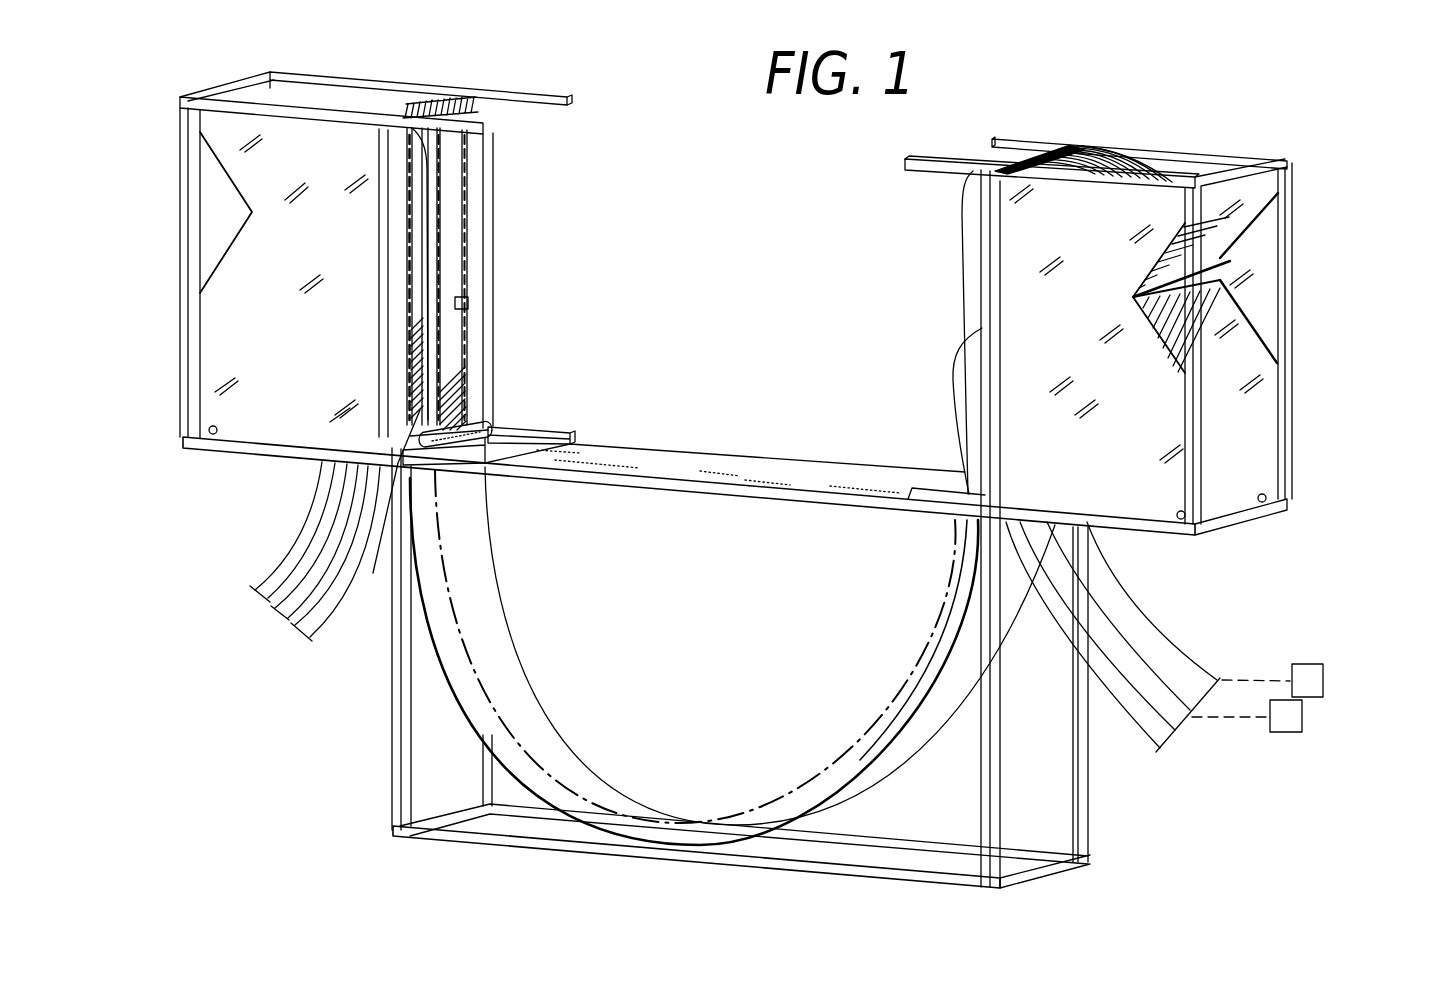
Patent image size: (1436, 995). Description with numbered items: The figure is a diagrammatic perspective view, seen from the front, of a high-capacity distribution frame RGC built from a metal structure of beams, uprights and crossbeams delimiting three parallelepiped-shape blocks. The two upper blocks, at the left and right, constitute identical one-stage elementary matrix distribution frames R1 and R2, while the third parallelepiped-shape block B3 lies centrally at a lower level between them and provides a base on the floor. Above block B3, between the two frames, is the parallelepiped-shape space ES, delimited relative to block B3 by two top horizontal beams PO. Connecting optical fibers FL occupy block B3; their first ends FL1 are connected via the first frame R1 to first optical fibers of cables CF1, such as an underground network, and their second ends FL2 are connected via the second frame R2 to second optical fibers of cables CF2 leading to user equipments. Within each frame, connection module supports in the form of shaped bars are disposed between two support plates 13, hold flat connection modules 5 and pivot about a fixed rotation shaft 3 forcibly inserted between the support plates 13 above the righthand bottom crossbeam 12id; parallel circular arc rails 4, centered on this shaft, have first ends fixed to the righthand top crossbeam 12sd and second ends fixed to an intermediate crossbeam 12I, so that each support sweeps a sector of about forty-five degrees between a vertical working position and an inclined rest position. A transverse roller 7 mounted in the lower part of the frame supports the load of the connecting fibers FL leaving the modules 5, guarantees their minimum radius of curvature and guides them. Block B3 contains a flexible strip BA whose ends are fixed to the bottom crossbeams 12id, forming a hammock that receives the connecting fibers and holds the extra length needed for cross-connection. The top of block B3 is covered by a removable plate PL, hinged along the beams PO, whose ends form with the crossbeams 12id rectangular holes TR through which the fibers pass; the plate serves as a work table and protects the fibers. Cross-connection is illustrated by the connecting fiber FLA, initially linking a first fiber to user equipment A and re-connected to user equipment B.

The first ends of connecting optical fibers FL1 is at (425, 167).
The second ends of connecting optical fibers FL2 is at (965, 197).
The connecting fiber FLA is at (953, 367).
The connecting optical fibers FL is at (587, 793).
The flat connection module 5 is at (470, 303).
The transverse roller 7 is at (477, 427).
The righthand bottom crossbeam 12id is at (498, 425).
The righthand top crossbeam 12sd is at (1045, 152).
The intermediate crossbeam 12I is at (1233, 267).
The support plates 13 is at (1260, 350).
The circular arc rails 4 is at (1113, 158).
The rotation shaft 3 is at (391, 508).
The rectangular holes TR is at (507, 452).
The removable plate PL is at (695, 455).
The top horizontal beams PO is at (797, 495).
The parallelepiped-shape space ES is at (775, 278).
The third parallelepiped-shape block B3 is at (760, 640).
The flexible strip BA is at (885, 775).
The cables CF1 is at (290, 560).
The cables CF2 is at (1148, 733).
The user equipment A is at (1272, 680).
The user equipment B is at (1247, 716).
The first elementary matrix distribution frame R1 is at (238, 737).
The second elementary matrix distribution frame R2 is at (1207, 570).
The high-capacity distribution frame RGC is at (1258, 820).